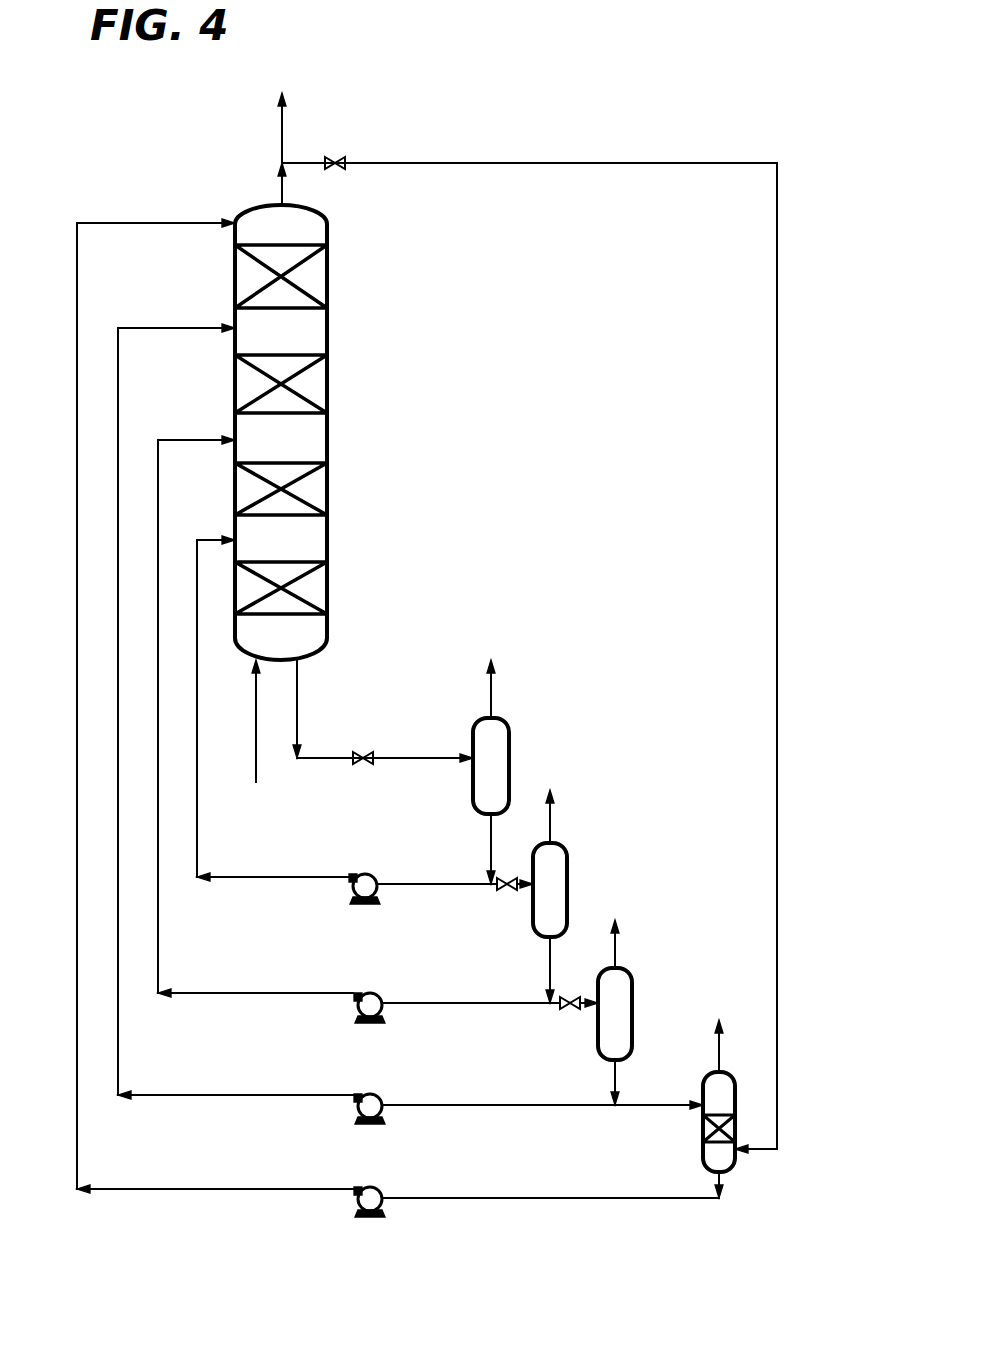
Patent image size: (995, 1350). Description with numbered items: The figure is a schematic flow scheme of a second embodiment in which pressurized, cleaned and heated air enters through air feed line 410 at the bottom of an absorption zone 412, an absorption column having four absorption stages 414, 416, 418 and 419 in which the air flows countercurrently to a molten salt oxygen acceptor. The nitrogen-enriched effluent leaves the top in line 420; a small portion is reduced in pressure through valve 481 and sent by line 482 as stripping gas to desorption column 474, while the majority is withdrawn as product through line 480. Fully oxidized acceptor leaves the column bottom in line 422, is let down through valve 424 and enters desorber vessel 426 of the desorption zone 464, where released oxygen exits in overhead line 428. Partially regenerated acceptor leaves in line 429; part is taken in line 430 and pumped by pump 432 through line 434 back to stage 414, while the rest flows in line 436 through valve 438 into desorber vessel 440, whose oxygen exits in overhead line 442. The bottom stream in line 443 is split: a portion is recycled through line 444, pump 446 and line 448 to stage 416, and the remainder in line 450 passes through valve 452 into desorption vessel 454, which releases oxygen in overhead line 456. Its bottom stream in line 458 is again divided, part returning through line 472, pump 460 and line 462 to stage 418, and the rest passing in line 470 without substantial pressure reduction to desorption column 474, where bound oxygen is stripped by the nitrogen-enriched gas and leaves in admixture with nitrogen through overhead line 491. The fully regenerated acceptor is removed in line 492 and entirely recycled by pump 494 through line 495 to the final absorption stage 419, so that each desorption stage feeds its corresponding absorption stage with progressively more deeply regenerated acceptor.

The air feed line 410 is at (255, 690).
The absorption zone 412 is at (337, 430).
The first absorption stage 414 is at (328, 590).
The second absorption stage 416 is at (328, 494).
The third absorption stage 418 is at (328, 388).
The fourth absorption stage 419 is at (328, 278).
The nitrogen-enriched effluent line 420 is at (281, 190).
The oxidized oxygen acceptor line 422 is at (300, 706).
The pressure reduction valve 424 is at (360, 754).
The desorber vessel 426 is at (510, 758).
The overhead oxygen line 428 is at (489, 690).
The partially regenerated acceptor line 429 is at (488, 836).
The recycle acceptor line 430 is at (444, 885).
The pump 432 is at (356, 905).
The return acceptor line 434 is at (312, 875).
The remaining acceptor line 436 is at (500, 890).
The pressure reduction valve 438 is at (509, 872).
The desorber vessel 440 is at (568, 886).
The overhead oxygen line 442 is at (548, 824).
The bottom acceptor line 443 is at (548, 976).
The recycle acceptor line 444 is at (484, 1001).
The pump 446 is at (369, 1024).
The return acceptor line 448 is at (292, 992).
The remaining acceptor line 450 is at (560, 1010).
The pressure reduction valve 452 is at (572, 997).
The desorption vessel 454 is at (636, 1008).
The overhead oxygen line 456 is at (612, 950).
The bottom acceptor line 458 is at (613, 1080).
The pump 460 is at (384, 1112).
The return acceptor line 462 is at (262, 1094).
The desorption zone 464 is at (665, 770).
The remaining acceptor line 470 is at (638, 1103).
The recycle acceptor line 472 is at (510, 1103).
The desorption column 474 is at (702, 1130).
The nitrogen product line 480 is at (280, 141).
The valve 481 is at (340, 160).
The stripping gas line 482 is at (478, 162).
The overhead line 491 is at (724, 1062).
The fully regenerated acceptor line 492 is at (626, 1201).
The pump 494 is at (386, 1208).
The return acceptor line 495 is at (270, 1193).